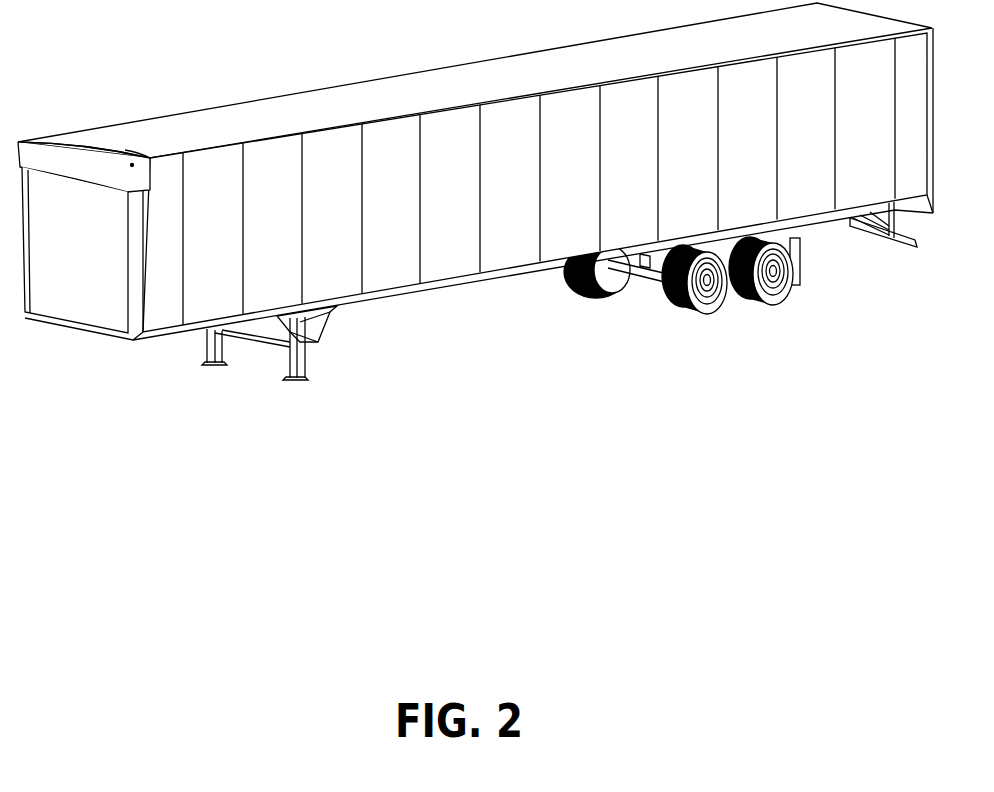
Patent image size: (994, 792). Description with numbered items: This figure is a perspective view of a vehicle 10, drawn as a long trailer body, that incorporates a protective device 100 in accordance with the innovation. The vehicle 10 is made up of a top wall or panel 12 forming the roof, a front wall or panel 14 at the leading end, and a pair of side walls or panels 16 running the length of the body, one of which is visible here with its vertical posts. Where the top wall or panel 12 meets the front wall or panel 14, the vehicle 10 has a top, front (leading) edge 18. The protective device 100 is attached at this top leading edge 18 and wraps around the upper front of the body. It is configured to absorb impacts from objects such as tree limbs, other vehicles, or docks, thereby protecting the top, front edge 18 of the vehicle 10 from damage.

The vehicle 10 is at (475, 191).
The top wall or panel 12 is at (237, 130).
The front wall or panel 14 is at (115, 252).
The side walls or panels 16 is at (256, 222).
The top front leading edge 18 is at (135, 140).
The protective device 100 is at (40, 120).